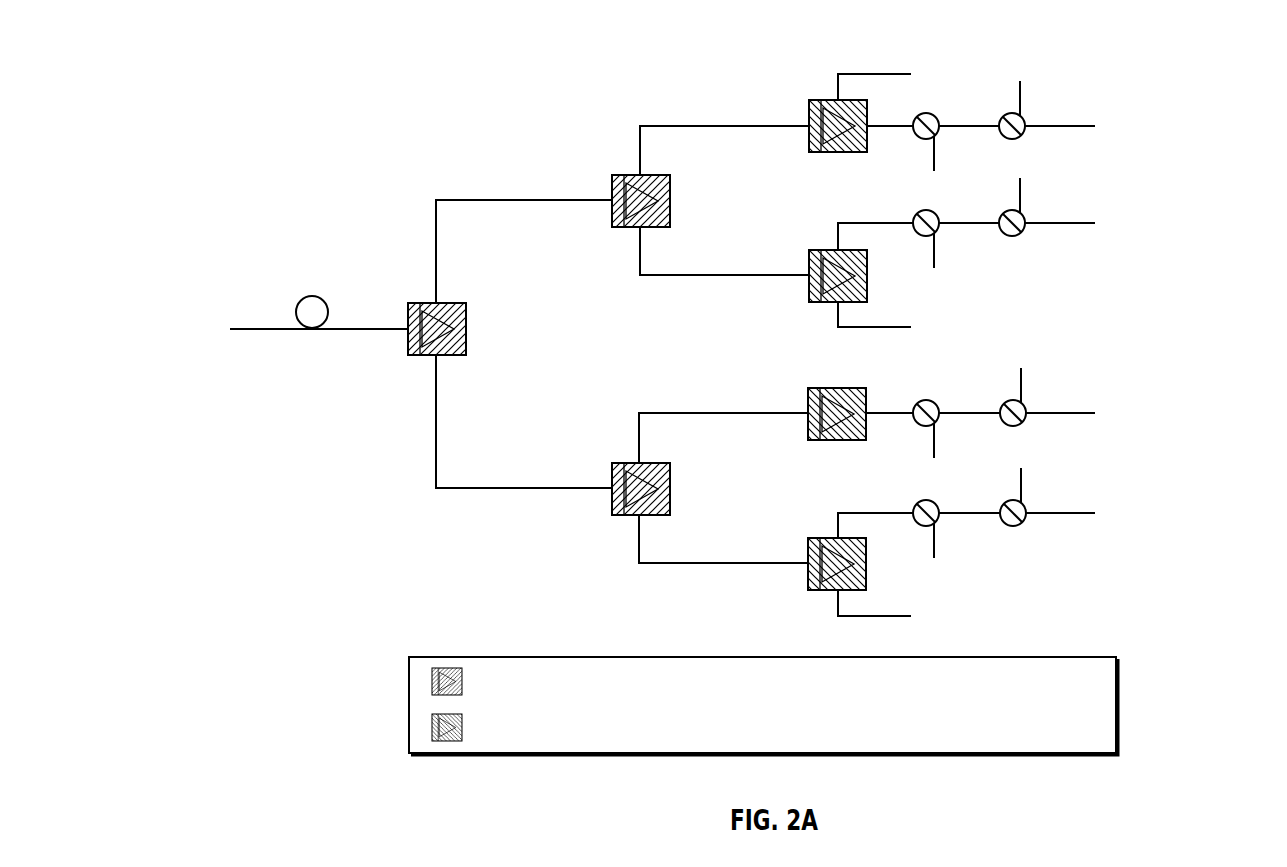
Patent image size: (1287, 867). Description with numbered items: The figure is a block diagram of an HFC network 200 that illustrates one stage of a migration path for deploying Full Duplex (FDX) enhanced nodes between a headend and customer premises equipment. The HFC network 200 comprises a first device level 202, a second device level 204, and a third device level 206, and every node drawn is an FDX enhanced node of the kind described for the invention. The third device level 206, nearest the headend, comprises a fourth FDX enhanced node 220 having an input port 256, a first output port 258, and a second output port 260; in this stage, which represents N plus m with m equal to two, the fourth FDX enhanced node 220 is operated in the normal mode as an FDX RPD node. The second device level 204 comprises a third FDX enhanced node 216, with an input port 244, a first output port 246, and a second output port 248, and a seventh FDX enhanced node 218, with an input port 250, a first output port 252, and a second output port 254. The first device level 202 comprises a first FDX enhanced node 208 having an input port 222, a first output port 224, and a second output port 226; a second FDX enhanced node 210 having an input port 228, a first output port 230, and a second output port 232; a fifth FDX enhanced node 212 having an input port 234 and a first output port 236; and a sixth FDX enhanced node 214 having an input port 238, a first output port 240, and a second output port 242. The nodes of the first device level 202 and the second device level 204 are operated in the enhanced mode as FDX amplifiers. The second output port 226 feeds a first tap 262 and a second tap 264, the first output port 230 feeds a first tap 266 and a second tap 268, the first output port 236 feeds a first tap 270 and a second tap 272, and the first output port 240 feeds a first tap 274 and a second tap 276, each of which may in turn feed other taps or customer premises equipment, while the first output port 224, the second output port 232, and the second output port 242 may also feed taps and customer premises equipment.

The HFC network 200 is at (1172, 50).
The first device level 202 is at (746, 33).
The second device level 204 is at (608, 61).
The third device level 206 is at (438, 126).
The first FDX enhanced node 208 is at (809, 115).
The second FDX enhanced node 210 is at (809, 290).
The fifth FDX enhanced node 212 is at (808, 403).
The sixth FDX enhanced node 214 is at (808, 573).
The third FDX enhanced node 216 is at (612, 190).
The seventh FDX enhanced node 218 is at (612, 478).
The fourth FDX enhanced node 220 is at (407, 317).
The input port 222 is at (805, 140).
The first output port 224 is at (838, 84).
The second output port 226 is at (889, 125).
The input port 228 is at (809, 268).
The first output port 230 is at (837, 233).
The second output port 232 is at (837, 318).
The input port 234 is at (802, 417).
The first output port 236 is at (889, 412).
The input port 238 is at (808, 563).
The first output port 240 is at (837, 525).
The second output port 242 is at (837, 607).
The input port 244 is at (602, 204).
The first output port 246 is at (638, 158).
The second output port 248 is at (637, 233).
The input port 250 is at (602, 493).
The first output port 252 is at (639, 445).
The second output port 254 is at (639, 530).
The input port 256 is at (398, 335).
The first output port 258 is at (435, 285).
The second output port 260 is at (436, 363).
The first tap 262 is at (926, 140).
The second tap 264 is at (1014, 140).
The first tap 266 is at (926, 238).
The second tap 268 is at (1014, 237).
The first tap 270 is at (926, 427).
The second tap 272 is at (1015, 427).
The first tap 274 is at (926, 527).
The second tap 276 is at (1015, 527).